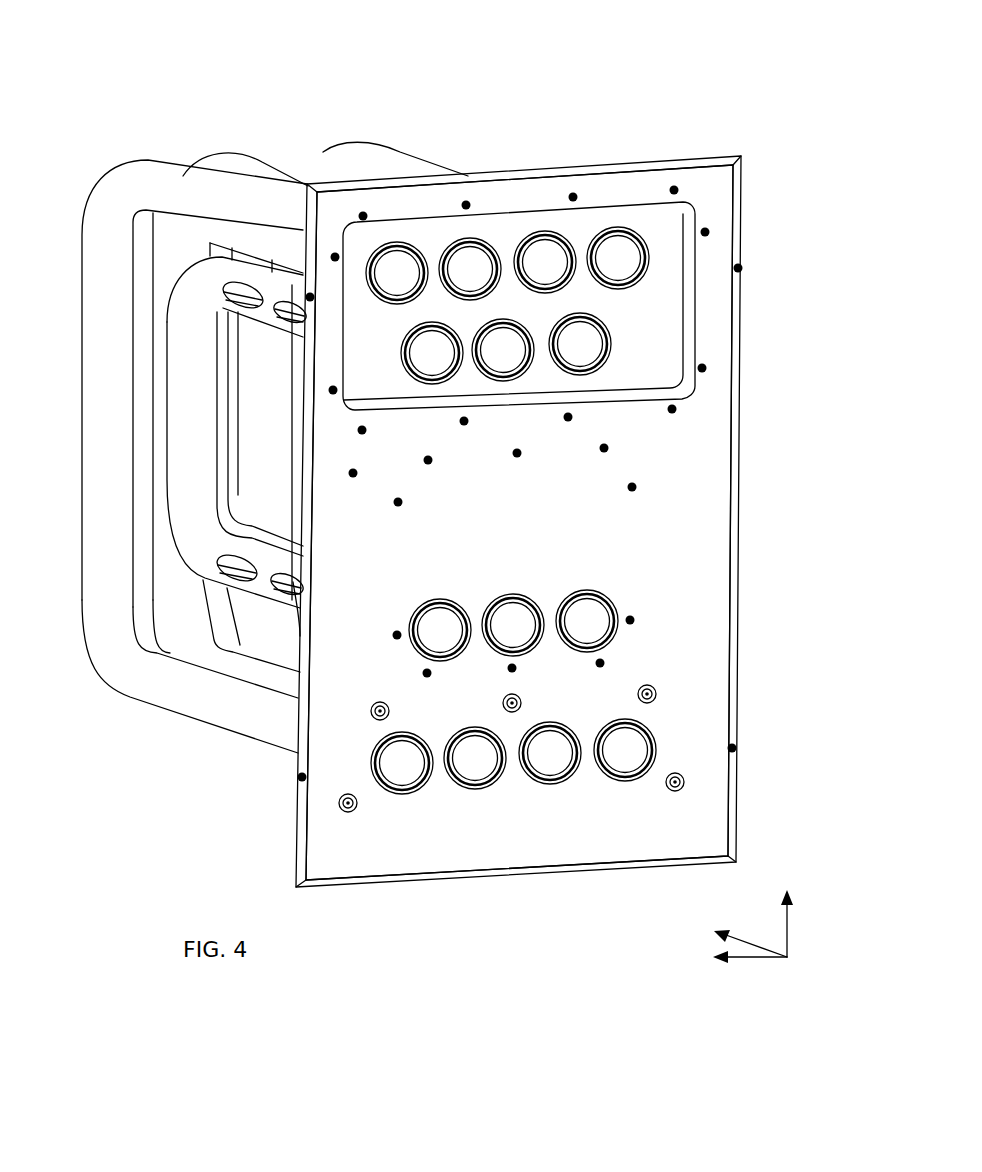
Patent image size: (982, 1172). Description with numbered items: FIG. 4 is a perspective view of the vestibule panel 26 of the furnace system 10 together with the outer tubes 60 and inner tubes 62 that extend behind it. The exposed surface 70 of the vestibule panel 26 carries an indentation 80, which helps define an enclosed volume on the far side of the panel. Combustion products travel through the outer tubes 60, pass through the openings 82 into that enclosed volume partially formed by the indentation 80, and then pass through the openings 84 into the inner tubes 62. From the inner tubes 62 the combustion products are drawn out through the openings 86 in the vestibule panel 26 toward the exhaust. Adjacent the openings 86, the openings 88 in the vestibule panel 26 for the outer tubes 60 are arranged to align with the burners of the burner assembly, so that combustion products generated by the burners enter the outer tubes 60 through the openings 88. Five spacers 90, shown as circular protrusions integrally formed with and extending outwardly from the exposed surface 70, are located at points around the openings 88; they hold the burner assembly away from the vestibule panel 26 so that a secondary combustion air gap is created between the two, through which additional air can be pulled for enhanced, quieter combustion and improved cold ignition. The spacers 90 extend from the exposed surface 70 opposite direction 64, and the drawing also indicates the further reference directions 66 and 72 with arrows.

The furnace system 10 is at (612, 78).
The vestibule panel 26 is at (744, 454).
The outer tubes 60 is at (176, 201).
The inner tubes 62 is at (186, 392).
The direction 64 is at (742, 938).
The vertical direction 66 is at (790, 922).
The exposed surface 70 is at (708, 327).
The longitudinal direction 72 is at (738, 962).
The indentation 80 is at (668, 241).
The openings 82 is at (397, 277).
The openings 84 is at (432, 355).
The openings 86 is at (441, 628).
The openings 88 is at (475, 760).
The spacers 90 is at (377, 704).